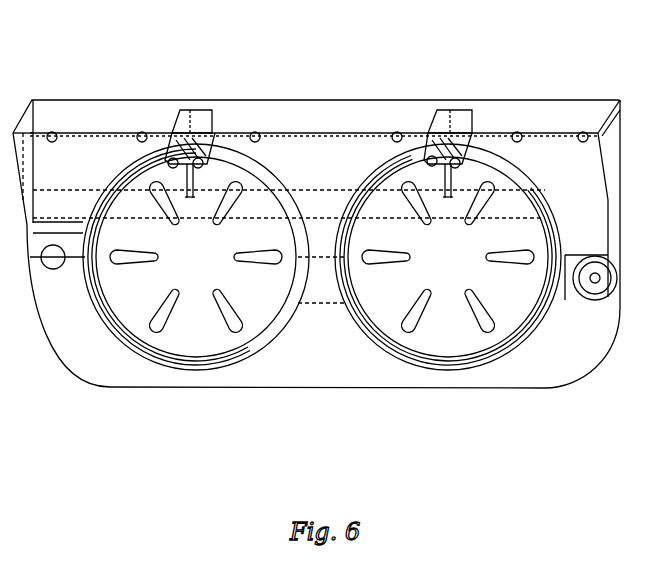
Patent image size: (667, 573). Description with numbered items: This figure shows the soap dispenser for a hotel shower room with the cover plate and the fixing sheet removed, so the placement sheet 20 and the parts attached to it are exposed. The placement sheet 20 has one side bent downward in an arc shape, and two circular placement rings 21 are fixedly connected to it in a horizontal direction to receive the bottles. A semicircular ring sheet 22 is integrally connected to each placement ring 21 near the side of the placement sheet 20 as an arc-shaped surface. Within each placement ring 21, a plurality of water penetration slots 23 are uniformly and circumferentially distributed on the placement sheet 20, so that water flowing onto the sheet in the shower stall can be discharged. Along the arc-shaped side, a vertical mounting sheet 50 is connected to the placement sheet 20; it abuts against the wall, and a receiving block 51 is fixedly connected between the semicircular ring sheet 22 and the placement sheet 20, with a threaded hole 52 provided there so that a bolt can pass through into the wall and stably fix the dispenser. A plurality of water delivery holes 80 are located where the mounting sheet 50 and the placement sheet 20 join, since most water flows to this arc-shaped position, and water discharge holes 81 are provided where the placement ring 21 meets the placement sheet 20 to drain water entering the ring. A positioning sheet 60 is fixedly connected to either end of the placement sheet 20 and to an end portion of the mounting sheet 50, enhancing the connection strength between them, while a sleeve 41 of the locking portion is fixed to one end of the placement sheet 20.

The placement sheet 20 is at (358, 165).
The placement ring 21 is at (450, 367).
The semicircular ring sheet 22 is at (543, 190).
The water penetration slots 23 is at (418, 312).
The sleeve 41 is at (592, 303).
The mounting sheet 50 is at (313, 115).
The receiving block 51 is at (458, 123).
The threaded hole 52 is at (196, 140).
The positioning sheet 60 is at (33, 137).
The water delivery holes 80 is at (517, 133).
The water discharge holes 81 is at (432, 147).